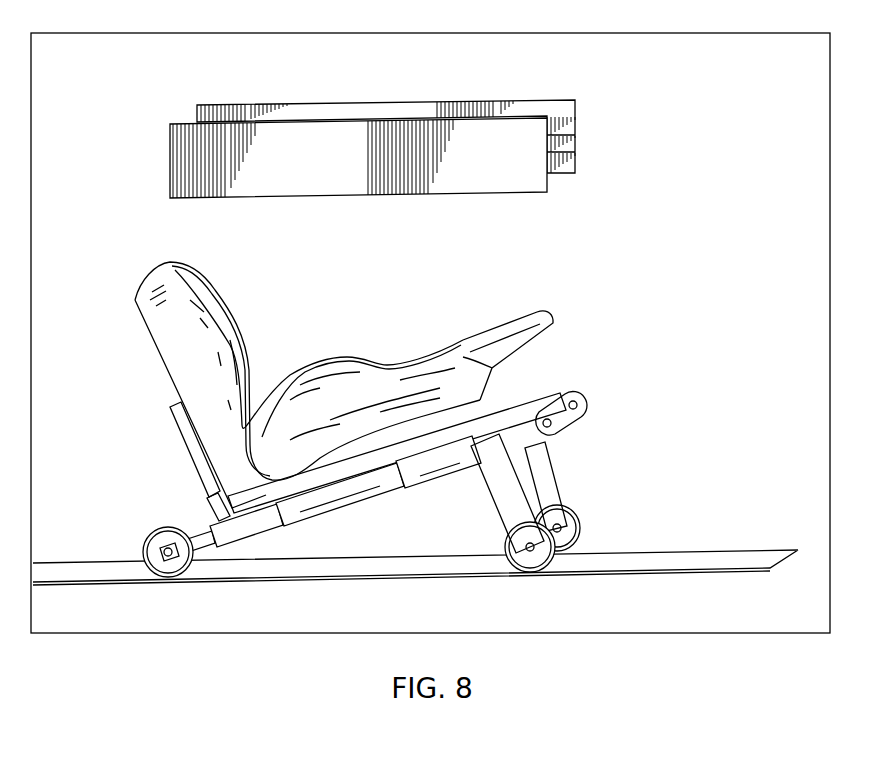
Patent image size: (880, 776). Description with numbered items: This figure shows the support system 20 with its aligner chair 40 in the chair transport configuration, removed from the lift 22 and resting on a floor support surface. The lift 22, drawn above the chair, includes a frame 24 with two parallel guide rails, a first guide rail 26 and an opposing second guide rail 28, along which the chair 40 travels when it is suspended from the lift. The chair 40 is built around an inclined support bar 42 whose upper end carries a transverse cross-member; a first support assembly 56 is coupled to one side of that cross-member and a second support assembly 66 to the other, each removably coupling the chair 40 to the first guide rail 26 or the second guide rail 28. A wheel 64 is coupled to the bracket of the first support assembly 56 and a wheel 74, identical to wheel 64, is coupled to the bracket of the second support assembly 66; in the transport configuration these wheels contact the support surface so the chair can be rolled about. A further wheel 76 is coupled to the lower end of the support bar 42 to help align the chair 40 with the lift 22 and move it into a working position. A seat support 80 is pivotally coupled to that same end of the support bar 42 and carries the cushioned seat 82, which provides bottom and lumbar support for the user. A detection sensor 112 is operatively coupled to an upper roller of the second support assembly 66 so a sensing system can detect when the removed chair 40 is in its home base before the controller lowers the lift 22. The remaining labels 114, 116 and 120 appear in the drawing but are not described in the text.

The support system 20 is at (637, 270).
The lift 22 is at (407, 74).
The frame 24 is at (498, 199).
The first guide rail 26 is at (304, 179).
The second guide rail 28 is at (318, 100).
The chair 40 is at (434, 320).
The support bar 42 is at (348, 502).
The first support assembly 56 is at (500, 496).
The wheel 64 is at (536, 571).
The second support assembly 66 is at (585, 397).
The wheel 74 is at (584, 531).
The wheel 76 is at (177, 565).
The seat support 80 is at (202, 462).
The cushioned seat 82 is at (350, 364).
The detection sensor 112 is at (538, 410).
The axle 114 is at (568, 518).
The axle 116 is at (153, 523).
The floor 120 is at (745, 553).